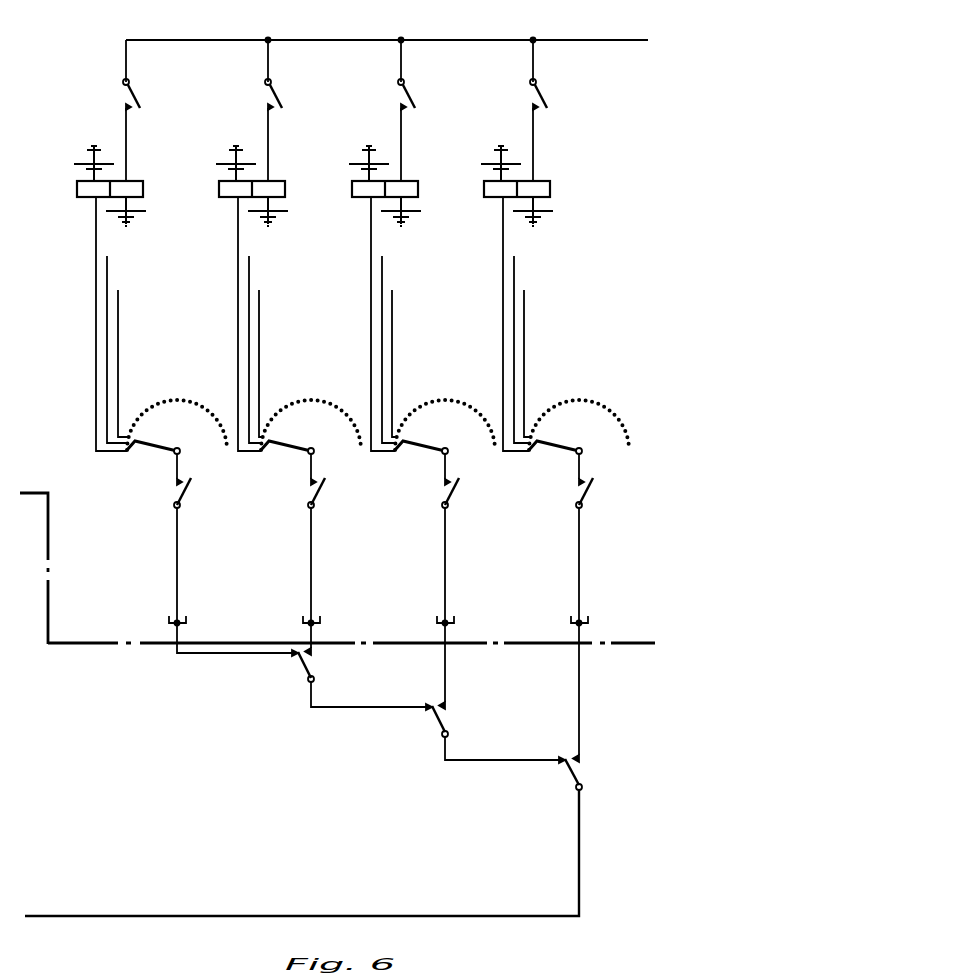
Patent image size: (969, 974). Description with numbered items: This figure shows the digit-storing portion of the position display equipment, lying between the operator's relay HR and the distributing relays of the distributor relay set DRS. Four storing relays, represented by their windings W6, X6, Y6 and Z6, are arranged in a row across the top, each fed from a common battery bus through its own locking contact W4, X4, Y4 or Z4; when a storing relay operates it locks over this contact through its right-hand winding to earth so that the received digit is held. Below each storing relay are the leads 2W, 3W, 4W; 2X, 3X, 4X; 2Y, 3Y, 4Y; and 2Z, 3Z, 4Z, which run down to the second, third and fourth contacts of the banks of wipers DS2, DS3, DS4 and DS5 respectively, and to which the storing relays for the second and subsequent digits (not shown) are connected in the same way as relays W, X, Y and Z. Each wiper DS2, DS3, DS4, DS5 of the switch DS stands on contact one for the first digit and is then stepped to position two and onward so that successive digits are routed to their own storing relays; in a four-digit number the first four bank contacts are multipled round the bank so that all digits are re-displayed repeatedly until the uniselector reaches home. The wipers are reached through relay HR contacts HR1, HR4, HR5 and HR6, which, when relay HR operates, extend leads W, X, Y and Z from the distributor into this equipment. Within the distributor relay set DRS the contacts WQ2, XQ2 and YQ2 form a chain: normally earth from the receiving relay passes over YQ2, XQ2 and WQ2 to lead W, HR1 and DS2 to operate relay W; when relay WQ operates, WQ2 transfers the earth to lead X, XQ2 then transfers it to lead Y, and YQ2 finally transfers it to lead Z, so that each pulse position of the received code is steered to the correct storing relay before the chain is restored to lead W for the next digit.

The relay W locking contact W4 is at (145, 110).
The relay X locking contact X4 is at (285, 110).
The relay Y locking contact Y4 is at (417, 110).
The relay Z locking contact Z4 is at (550, 110).
The relay W winding W6 is at (160, 188).
The relay X winding X6 is at (302, 188).
The relay Y winding Y6 is at (435, 188).
The relay Z winding Z6 is at (567, 188).
The lead 2W is at (111, 324).
The lead 3W is at (120, 349).
The lead 4W is at (131, 363).
The lead 2X is at (249, 324).
The lead 3X is at (260, 349).
The lead 4X is at (270, 363).
The lead 2Y is at (383, 324).
The lead 3Y is at (392, 349).
The lead 4Y is at (402, 363).
The lead 2Z is at (516, 324).
The lead 3Z is at (525, 349).
The lead 4Z is at (535, 363).
The wiper DS2 is at (177, 436).
The wiper DS3 is at (311, 436).
The wiper DS4 is at (445, 436).
The wiper DS5 is at (579, 436).
The relay HR contact HR1 is at (198, 548).
The relay HR contact HR4 is at (332, 548).
The relay HR contact HR5 is at (466, 548).
The relay HR contact HR6 is at (600, 548).
The lead W is at (184, 630).
The lead X is at (315, 630).
The lead Y is at (449, 630).
The lead Z is at (583, 630).
The relay WQ contact WQ2 is at (267, 662).
The relay XQ contact XQ2 is at (398, 690).
The relay YQ contact YQ2 is at (532, 716).
The distributor relay set DRS is at (224, 764).